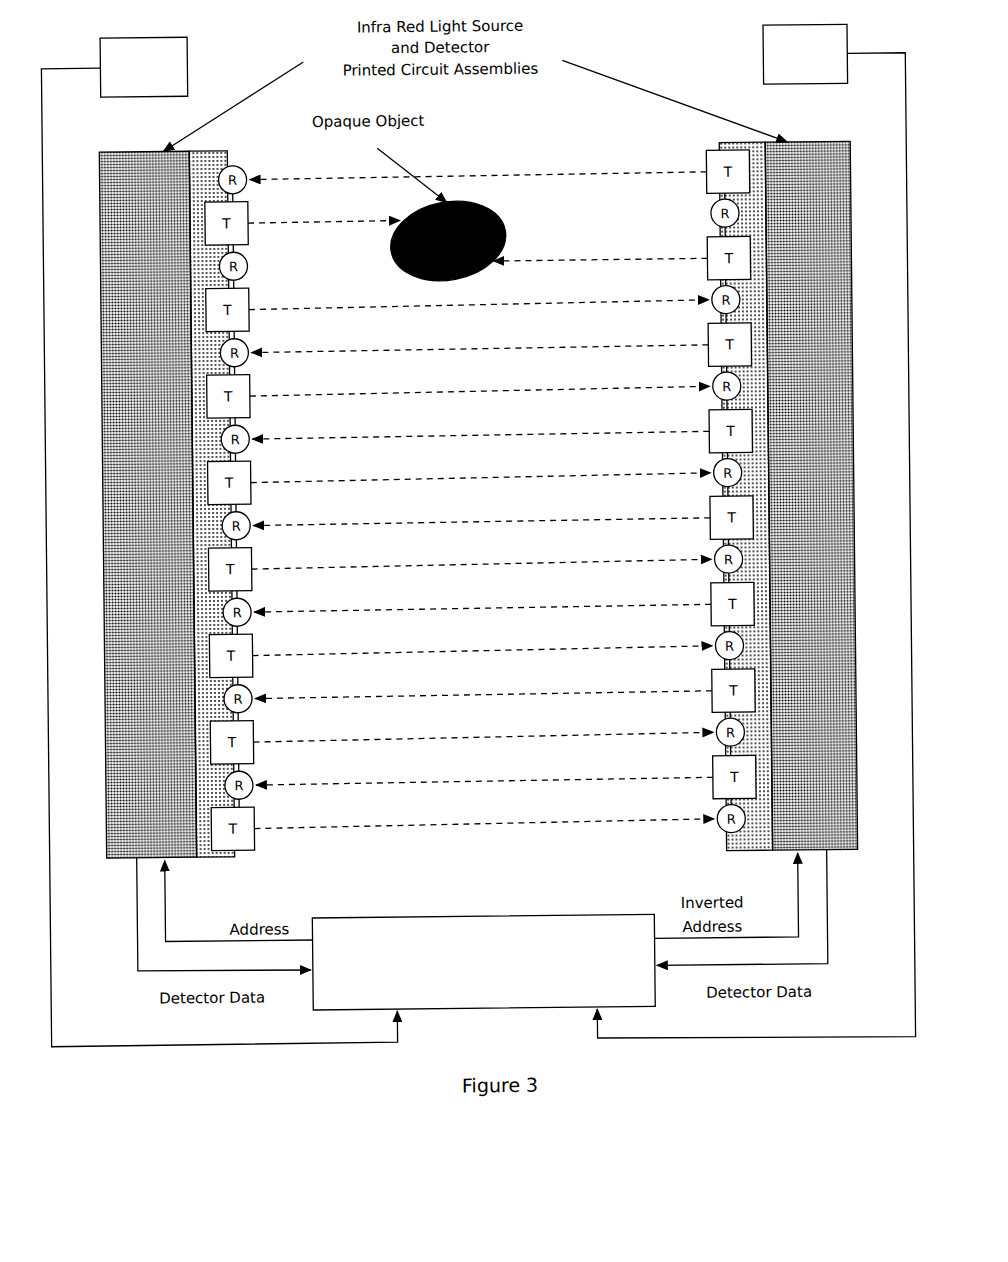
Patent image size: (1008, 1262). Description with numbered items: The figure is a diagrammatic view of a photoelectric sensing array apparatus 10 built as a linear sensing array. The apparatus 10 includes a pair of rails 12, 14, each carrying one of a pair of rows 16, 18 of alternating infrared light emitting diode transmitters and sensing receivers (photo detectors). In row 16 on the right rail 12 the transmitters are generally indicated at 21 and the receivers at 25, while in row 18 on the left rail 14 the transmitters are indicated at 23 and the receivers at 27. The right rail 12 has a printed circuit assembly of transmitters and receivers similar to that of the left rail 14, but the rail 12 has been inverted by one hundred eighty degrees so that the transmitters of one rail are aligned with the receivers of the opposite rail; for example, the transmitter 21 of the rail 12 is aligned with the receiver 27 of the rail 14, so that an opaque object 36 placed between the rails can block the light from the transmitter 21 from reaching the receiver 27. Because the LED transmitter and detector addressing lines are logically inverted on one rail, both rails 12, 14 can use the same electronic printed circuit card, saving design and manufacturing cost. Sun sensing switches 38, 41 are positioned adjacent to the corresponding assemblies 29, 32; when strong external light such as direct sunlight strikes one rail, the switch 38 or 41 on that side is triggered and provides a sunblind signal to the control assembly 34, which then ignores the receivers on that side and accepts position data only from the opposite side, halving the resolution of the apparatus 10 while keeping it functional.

The photoelectric sensing array apparatus 10 is at (480, 566).
The right rail 12 is at (727, 855).
The left rail 14 is at (205, 855).
The row of alternating transmitters and receivers 16 is at (720, 839).
The row of alternating transmitters and receivers 18 is at (252, 841).
The IR light emitting diode transmitter 21 is at (711, 247).
The IR light emitting diode transmitter 23 is at (251, 205).
The sensing receiver 25 is at (711, 214).
The sensing receiver 27 is at (251, 264).
The assembly 29 is at (808, 143).
The assembly 32 is at (135, 148).
The control assembly 34 is at (509, 1008).
The opaque object 36 is at (507, 220).
The sun sensing switch 38 is at (783, 28).
The sun sensing switch 41 is at (194, 49).